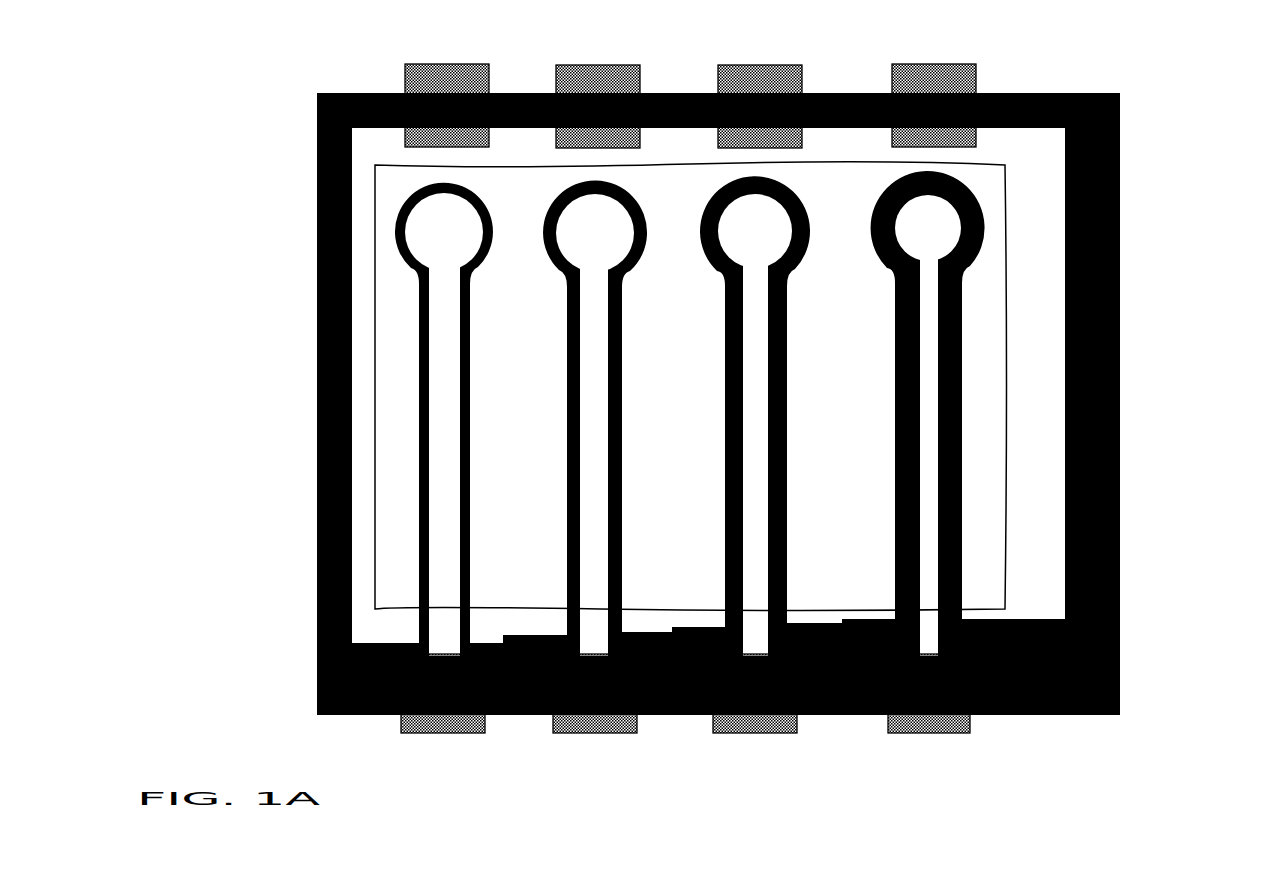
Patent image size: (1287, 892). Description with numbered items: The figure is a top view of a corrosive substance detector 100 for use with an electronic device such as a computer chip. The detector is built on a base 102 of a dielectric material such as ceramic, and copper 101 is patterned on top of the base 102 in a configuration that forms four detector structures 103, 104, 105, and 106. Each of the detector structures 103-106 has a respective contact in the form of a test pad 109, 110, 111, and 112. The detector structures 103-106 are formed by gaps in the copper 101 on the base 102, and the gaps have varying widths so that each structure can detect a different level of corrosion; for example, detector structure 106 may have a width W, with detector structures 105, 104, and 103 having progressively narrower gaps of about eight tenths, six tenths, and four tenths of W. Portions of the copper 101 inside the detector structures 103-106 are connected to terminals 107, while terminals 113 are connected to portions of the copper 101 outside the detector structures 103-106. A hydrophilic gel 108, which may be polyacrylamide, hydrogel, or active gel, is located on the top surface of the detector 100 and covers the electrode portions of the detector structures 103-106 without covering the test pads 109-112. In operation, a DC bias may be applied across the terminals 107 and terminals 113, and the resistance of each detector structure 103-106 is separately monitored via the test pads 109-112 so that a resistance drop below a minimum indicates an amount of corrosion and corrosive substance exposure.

The corrosive substance detector 100 is at (792, 398).
The copper 101 is at (1054, 571).
The base 102 is at (1121, 433).
The detector structure 103 is at (470, 362).
The detector structure 104 is at (622, 398).
The detector structure 105 is at (786, 385).
The detector structure 106 is at (897, 445).
The terminals 107 is at (459, 704).
The hydrophilic gel 108 is at (534, 499).
The test pad 109 is at (459, 244).
The test pad 110 is at (612, 240).
The test pad 111 is at (773, 239).
The test pad 112 is at (946, 239).
The terminals 113 is at (464, 118).